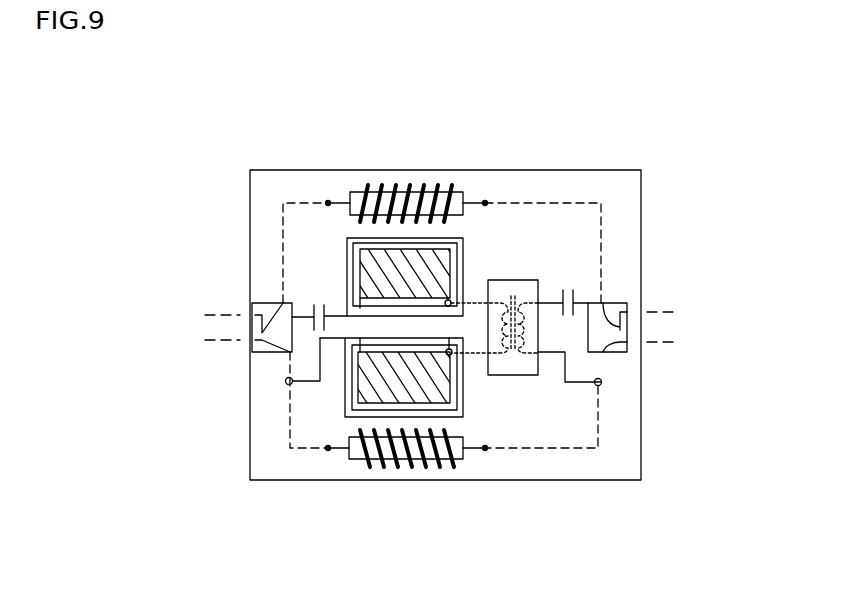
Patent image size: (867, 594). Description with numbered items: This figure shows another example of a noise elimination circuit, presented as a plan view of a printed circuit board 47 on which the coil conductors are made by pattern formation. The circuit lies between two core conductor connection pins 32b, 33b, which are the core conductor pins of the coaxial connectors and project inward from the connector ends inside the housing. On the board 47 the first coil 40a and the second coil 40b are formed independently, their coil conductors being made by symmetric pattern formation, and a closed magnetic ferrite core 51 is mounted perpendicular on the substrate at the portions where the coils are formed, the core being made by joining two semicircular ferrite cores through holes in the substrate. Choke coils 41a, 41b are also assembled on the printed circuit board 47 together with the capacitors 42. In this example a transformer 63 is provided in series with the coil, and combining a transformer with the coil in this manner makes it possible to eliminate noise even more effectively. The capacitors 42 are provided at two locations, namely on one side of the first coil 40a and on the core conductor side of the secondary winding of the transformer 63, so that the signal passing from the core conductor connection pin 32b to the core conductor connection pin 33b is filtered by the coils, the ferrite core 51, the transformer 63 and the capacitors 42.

The printed circuit board 47 is at (478, 170).
The closed magnetic ferrite core 51 is at (455, 325).
The transformer 63 is at (520, 280).
The first coil 40a is at (342, 247).
The second coil 40b is at (347, 402).
The choke coil 41a is at (404, 185).
The choke coil 41b is at (388, 460).
The capacitor 42 is at (318, 297).
The core conductor connection pin 32b is at (222, 312).
The core conductor connection pin 33b is at (650, 308).